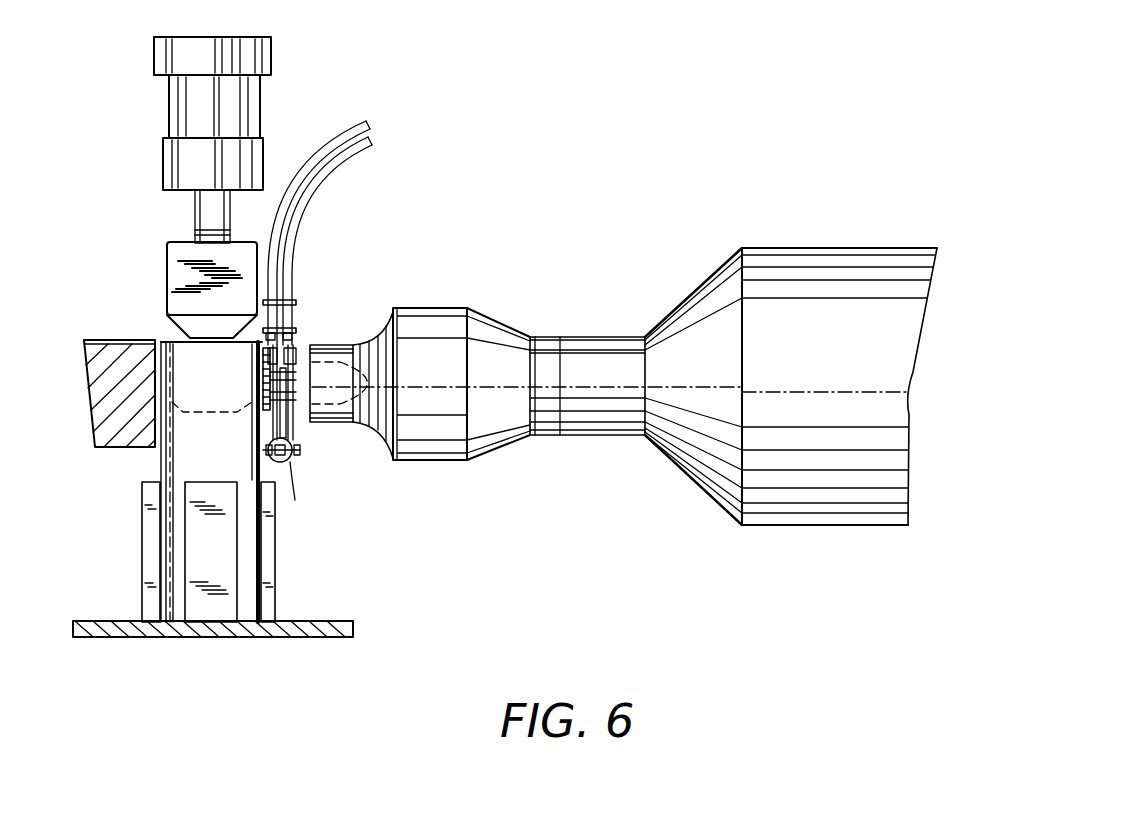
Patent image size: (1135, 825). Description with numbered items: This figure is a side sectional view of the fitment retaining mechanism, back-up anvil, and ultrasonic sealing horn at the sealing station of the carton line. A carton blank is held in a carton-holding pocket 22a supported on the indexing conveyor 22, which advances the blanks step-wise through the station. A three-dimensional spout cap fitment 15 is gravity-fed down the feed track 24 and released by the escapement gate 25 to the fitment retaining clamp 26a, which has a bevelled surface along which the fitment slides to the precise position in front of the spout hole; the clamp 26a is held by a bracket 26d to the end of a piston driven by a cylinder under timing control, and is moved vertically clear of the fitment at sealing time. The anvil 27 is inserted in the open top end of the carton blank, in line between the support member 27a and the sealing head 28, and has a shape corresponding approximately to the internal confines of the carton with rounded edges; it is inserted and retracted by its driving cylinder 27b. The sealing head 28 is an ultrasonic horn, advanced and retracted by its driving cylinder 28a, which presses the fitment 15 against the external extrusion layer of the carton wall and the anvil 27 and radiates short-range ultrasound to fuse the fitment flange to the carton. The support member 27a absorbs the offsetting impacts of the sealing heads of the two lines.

The spout cap fitment 15 is at (302, 355).
The indexing conveyor 22 is at (313, 640).
The carton-holding pocket 22a is at (143, 582).
The feed track 24 is at (304, 209).
The escapement gate 25 is at (297, 302).
The fitment retaining clamp 26a is at (282, 424).
The bracket 26d is at (288, 464).
The anvil 27 is at (169, 273).
The support member 27a is at (113, 362).
The driving cylinder 27b is at (169, 103).
The sealing head 28 is at (480, 283).
The driving cylinder 28a is at (708, 298).